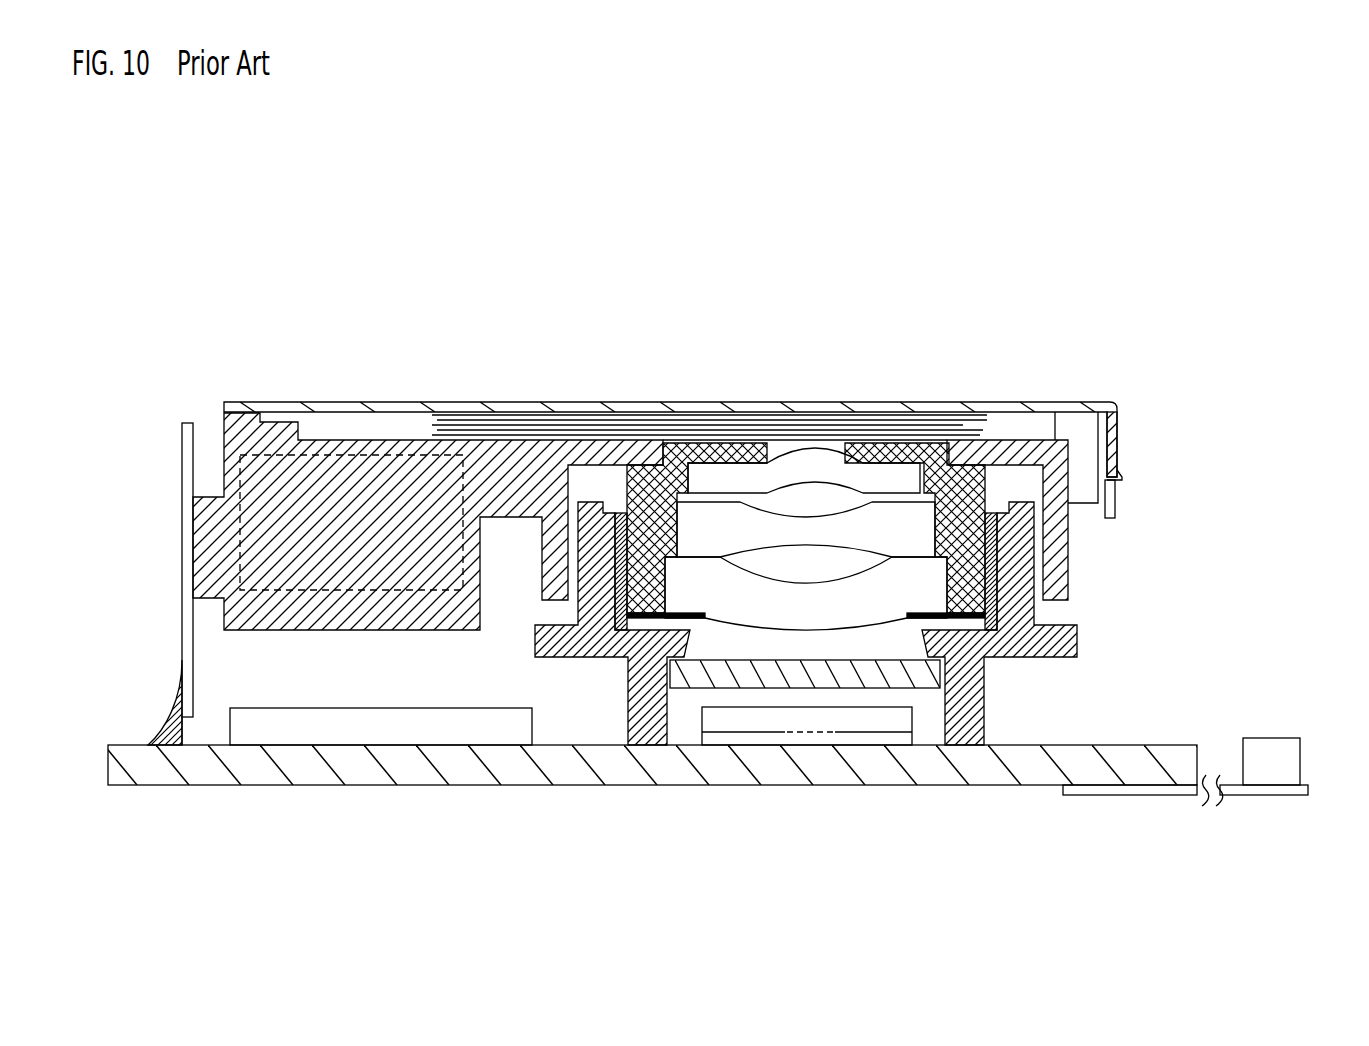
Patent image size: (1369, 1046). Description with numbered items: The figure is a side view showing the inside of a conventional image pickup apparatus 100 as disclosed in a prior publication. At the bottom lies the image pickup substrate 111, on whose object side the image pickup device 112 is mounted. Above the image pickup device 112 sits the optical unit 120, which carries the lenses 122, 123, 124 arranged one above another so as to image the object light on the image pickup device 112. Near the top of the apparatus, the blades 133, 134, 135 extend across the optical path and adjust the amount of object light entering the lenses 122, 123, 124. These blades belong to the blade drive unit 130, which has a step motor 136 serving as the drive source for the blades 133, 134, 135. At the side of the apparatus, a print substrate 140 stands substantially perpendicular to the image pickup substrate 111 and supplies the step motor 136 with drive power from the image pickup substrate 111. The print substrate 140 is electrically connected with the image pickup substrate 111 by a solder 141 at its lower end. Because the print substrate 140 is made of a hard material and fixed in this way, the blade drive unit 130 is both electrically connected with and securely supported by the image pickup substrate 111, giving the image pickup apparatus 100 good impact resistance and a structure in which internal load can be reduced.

The image pickup apparatus 100 is at (536, 224).
The image pickup substrate 111 is at (903, 777).
The image pickup device 112 is at (791, 738).
The optical unit 120 is at (768, 522).
The lens 122 is at (710, 472).
The lens 123 is at (744, 520).
The lens 124 is at (900, 583).
The blade drive unit 130 is at (748, 435).
The blade 133 is at (460, 437).
The blade 134 is at (492, 427).
The blade 135 is at (530, 417).
The step motor 136 is at (182, 540).
The print substrate 140 is at (188, 455).
The solder 141 is at (167, 718).